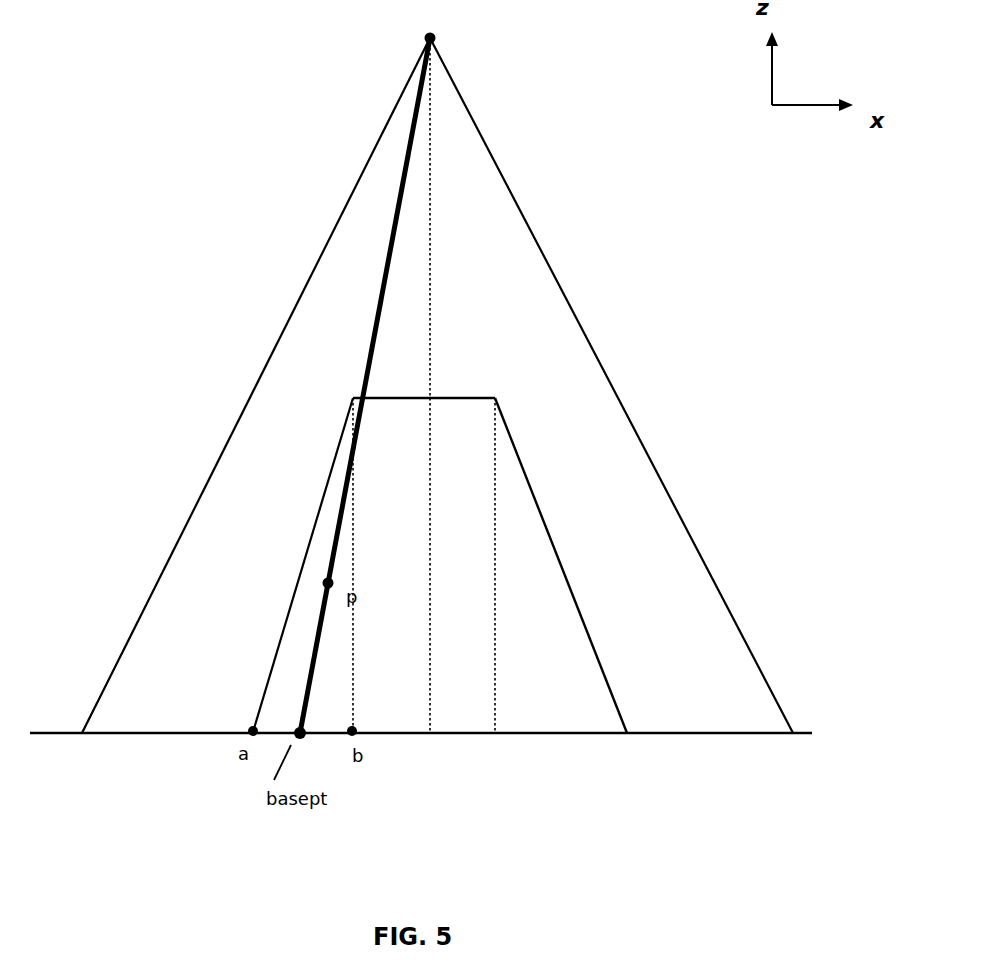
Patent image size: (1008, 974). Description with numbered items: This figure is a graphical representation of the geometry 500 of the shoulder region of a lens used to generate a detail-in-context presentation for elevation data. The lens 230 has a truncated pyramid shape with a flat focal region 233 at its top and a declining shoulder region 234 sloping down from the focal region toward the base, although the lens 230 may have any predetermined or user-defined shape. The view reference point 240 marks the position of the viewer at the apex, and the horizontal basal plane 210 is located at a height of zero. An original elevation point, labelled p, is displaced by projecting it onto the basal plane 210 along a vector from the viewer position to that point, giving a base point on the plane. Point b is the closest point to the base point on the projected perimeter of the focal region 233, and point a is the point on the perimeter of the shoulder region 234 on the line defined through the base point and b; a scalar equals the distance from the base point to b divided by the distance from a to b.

The geometry 500 is at (847, 369).
The lens 230 is at (612, 632).
The focal region 233 is at (462, 398).
The shoulder region 234 is at (517, 462).
The baseplane 210 is at (673, 743).
The view reference point 240 is at (398, 42).